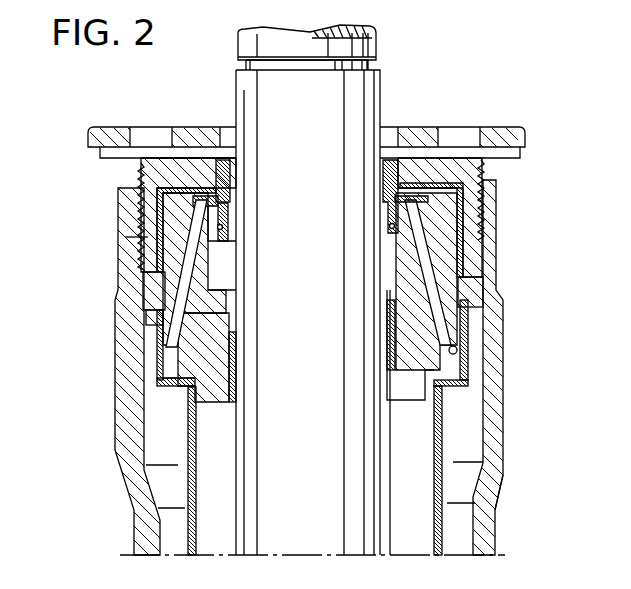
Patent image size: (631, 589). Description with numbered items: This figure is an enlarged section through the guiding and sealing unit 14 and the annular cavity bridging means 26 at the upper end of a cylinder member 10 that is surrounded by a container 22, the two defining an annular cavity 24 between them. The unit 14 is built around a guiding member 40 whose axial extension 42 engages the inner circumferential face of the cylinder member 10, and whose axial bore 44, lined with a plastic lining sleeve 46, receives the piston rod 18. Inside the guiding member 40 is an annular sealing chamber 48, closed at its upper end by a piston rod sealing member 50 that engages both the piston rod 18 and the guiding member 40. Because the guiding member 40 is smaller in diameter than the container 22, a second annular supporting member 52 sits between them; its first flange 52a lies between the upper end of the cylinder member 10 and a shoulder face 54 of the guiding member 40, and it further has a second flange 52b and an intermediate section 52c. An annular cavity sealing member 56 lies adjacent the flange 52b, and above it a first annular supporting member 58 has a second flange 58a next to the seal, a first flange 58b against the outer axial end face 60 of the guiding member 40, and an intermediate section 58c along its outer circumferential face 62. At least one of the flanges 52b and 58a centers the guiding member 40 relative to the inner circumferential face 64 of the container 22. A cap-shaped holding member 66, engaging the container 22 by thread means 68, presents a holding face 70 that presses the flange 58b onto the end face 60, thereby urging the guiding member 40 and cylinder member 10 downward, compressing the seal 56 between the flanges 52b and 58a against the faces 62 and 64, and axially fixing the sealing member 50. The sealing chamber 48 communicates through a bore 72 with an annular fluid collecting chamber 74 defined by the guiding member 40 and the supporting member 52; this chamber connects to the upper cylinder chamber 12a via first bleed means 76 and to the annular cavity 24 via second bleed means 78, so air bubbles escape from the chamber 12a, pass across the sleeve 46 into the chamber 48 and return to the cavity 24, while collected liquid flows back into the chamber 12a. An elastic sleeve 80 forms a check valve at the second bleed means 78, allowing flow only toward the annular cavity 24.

The cylinder member 10 is at (442, 433).
The upper cylinder chamber 12a is at (422, 482).
The guiding and sealing unit 14 is at (440, 265).
The piston rod 18 is at (318, 493).
The container 22 is at (483, 515).
The annular cavity 24 is at (460, 537).
The annular cavity bridging means 26 is at (150, 237).
The guiding member 40 is at (447, 228).
The axial extension 42 is at (218, 392).
The axial bore 44 is at (385, 303).
The lining sleeve 46 is at (236, 380).
The annular sealing chamber 48 is at (230, 285).
The piston rod sealing member 50 is at (234, 190).
The second annular supporting member 52 is at (157, 348).
The first flange 52a is at (177, 398).
The second flange 52b is at (150, 315).
The intermediate section 52c is at (160, 380).
The shoulder face 54 is at (238, 360).
The annular cavity sealing member 56 is at (475, 298).
The first annular supporting member 58 is at (135, 252).
The second flange 58a is at (148, 285).
The first flange 58b is at (185, 185).
The intermediate section 58c is at (157, 228).
The outer axial end face 60 is at (140, 195).
The outer circumferential face 62 is at (207, 262).
The inner circumferential face 64 is at (150, 428).
The cap-shaped holding member 66 is at (148, 178).
The thread means 68 is at (497, 190).
The holding face 70 is at (428, 195).
The bore 72 is at (185, 318).
The annular fluid collecting chamber 74 is at (442, 388).
The first bleed means 76 is at (425, 400).
The second bleed means 78 is at (458, 350).
The elastic sleeve 80 is at (468, 328).